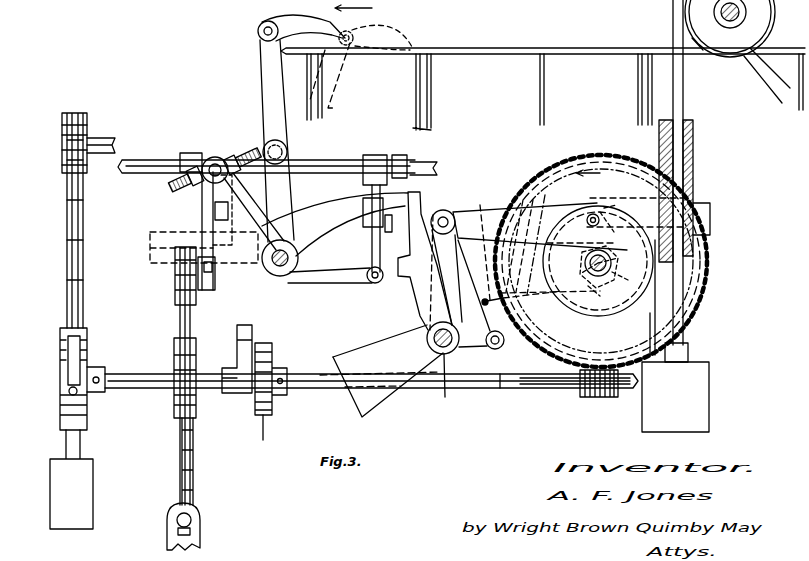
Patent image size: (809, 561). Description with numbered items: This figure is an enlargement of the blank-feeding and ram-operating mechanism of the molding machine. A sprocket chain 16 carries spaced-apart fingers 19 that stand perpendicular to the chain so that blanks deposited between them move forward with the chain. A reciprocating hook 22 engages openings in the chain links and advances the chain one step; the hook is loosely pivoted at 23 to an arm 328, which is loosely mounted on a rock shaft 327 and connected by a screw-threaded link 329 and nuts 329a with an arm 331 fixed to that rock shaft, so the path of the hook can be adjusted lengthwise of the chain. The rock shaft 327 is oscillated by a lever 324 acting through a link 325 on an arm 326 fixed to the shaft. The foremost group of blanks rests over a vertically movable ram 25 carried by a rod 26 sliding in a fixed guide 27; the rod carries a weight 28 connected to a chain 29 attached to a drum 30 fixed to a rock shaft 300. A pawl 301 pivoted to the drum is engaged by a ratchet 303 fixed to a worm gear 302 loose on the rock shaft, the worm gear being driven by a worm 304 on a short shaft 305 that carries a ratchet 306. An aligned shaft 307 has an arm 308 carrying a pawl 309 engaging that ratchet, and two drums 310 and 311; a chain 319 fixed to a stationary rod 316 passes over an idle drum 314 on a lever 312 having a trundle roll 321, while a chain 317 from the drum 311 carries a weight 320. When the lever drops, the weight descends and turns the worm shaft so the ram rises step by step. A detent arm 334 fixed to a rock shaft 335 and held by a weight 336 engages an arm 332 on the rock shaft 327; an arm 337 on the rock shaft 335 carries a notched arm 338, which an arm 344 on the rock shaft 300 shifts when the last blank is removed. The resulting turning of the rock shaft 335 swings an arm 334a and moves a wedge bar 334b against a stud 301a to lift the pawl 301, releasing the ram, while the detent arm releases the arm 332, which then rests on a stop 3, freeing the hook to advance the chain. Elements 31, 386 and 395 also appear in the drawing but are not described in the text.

The stop 3 is at (402, 268).
The sprocket chain 16 is at (481, 55).
The finger 19 is at (541, 90).
The reciprocating hook 22 is at (300, 22).
The pivot 23 is at (259, 24).
The ram 25 is at (737, 51).
The rod 26 is at (684, 96).
The fixed guide 27 is at (694, 155).
The weight 28 is at (710, 401).
The chain 29 is at (647, 320).
The drum 30 is at (597, 313).
The rack 31 is at (86, 112).
The rock shaft 300 is at (588, 268).
The pawl 301 is at (607, 212).
The stud 301a is at (608, 207).
The worm gear 302 is at (556, 360).
The ratchet 303 is at (616, 281).
The worm 304 is at (608, 398).
The short shaft 305 is at (503, 390).
The ratchet 306 is at (268, 435).
The shaft 307 is at (141, 388).
The arm 308 is at (240, 350).
The pawl 309 is at (273, 341).
The drum 310 is at (175, 357).
The drum 311 is at (87, 346).
The lever 312 is at (218, 270).
The idle roll or drum 314 is at (175, 289).
The stationary rod 316 is at (199, 525).
The chain 317 is at (84, 182).
The chain 319 is at (195, 441).
The weight 320 is at (93, 498).
The trundle roll 321 is at (203, 220).
The lever 324 is at (408, 163).
The link 325 is at (375, 160).
The arm 326 is at (331, 280).
The rock shaft 327 is at (282, 277).
The arm 328 is at (264, 74).
The link 329 is at (264, 150).
The nuts 329a is at (218, 157).
The arm 331 is at (256, 206).
The arm 332 is at (322, 226).
The detent arm 334 is at (420, 312).
The arm 334a is at (443, 210).
The wedge bar 334b is at (543, 225).
The rock shaft 335 is at (428, 347).
The weight 336 is at (360, 393).
The arm 337 is at (491, 349).
The notched arm 338 is at (485, 235).
The arm 344 is at (598, 294).
The rod 386 is at (160, 160).
The dashed frame 395 is at (150, 262).